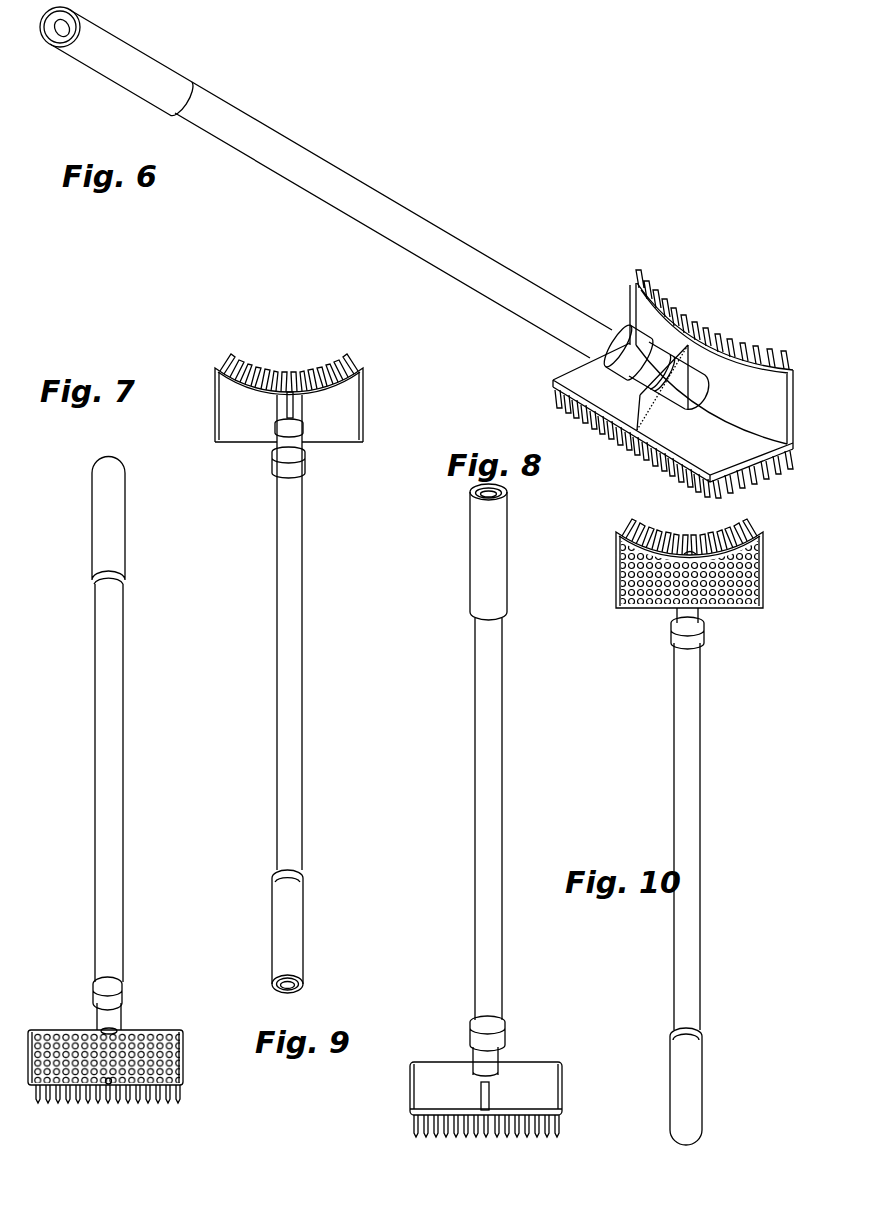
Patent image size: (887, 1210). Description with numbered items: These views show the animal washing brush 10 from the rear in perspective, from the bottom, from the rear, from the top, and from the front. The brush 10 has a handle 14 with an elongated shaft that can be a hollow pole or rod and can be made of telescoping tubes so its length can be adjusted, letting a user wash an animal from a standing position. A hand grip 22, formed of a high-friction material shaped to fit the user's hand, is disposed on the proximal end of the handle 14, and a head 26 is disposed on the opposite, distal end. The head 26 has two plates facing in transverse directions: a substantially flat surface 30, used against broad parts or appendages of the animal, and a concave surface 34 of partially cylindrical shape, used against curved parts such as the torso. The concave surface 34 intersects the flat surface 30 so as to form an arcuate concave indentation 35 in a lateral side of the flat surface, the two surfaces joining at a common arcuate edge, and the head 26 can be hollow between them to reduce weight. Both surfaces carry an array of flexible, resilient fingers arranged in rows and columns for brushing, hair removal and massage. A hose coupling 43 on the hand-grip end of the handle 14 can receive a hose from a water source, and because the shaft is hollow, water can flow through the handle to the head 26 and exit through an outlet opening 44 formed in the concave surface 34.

In FIG. 6, the brush 10 is at (482, 207).
In FIG. 7, the brush 10 is at (96, 698).
In FIG. 8, the brush 10 is at (474, 758).
In FIG. 9, the brush 10 is at (276, 603).
In FIG. 10, the brush 10 is at (678, 742).
In FIG. 6, the handle 14 is at (360, 192).
In FIG. 6, the hand grip 22 is at (95, 60).
In FIG. 6, the head 26 is at (676, 271).
In FIG. 6, the flat surface 30 is at (595, 400).
In FIG. 7, the flat surface 30 is at (55, 1097).
In FIG. 8, the flat surface 30 is at (527, 1112).
In FIG. 9, the flat surface 30 is at (328, 425).
In FIG. 10, the flat surface 30 is at (743, 603).
In FIG. 6, the concave surface 34 is at (737, 385).
In FIG. 7, the concave surface 34 is at (155, 1045).
In FIG. 8, the concave surface 34 is at (443, 1080).
In FIG. 9, the concave surface 34 is at (255, 385).
In FIG. 10, the concave surface 34 is at (640, 545).
In FIG. 10, the arcuate concave indentation 35 is at (693, 553).
In FIG. 6, the hose coupling 43 is at (78, 9).
In FIG. 9, the hose coupling 43 is at (288, 975).
In FIG. 7, the outlet opening 44 is at (107, 1080).